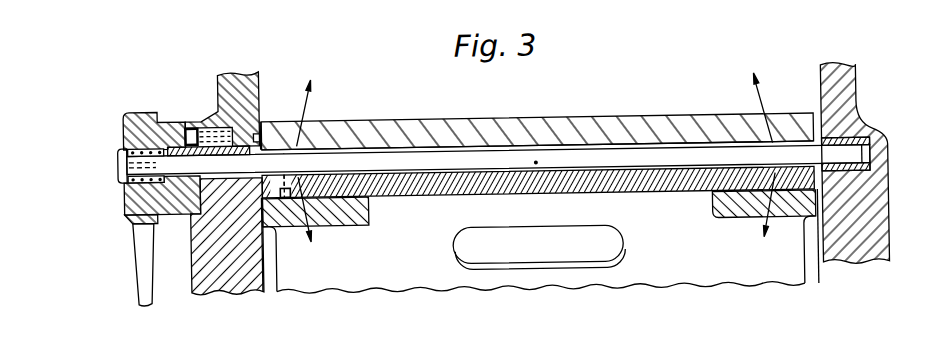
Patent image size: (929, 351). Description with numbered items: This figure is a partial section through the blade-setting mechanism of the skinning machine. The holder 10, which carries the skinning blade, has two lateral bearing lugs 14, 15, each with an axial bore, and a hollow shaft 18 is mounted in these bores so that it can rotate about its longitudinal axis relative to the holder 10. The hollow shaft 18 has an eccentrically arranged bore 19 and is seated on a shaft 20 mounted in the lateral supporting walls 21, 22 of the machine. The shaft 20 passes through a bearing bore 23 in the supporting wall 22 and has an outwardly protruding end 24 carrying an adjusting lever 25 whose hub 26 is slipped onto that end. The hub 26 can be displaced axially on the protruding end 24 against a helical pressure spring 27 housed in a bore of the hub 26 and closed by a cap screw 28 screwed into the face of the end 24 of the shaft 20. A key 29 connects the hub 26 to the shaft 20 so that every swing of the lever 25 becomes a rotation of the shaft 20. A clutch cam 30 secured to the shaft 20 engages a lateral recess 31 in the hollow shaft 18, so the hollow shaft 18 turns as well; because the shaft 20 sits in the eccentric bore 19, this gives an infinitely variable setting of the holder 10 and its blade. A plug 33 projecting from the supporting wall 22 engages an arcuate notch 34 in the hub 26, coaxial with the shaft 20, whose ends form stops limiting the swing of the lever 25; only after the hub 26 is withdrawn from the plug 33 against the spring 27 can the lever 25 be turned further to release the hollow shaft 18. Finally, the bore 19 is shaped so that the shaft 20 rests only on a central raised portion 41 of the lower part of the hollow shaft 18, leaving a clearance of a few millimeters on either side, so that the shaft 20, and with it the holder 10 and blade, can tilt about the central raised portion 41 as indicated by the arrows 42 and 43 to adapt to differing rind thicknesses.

The holder 10 is at (378, 125).
The lateral bearing lug 14 is at (363, 225).
The lateral bearing lug 15 is at (733, 216).
The hollow shaft 18 is at (437, 194).
The eccentrically arranged bore 19 is at (430, 147).
The shaft 20 is at (670, 158).
The lateral supporting wall 21 is at (849, 104).
The lateral supporting wall 22 is at (248, 71).
The bearing bore 23 is at (199, 212).
The outwardly protruding end 24 is at (176, 163).
The adjusting lever 25 is at (140, 274).
The hub 26 is at (128, 206).
The helical pressure spring 27 is at (130, 178).
The cap screw 28 is at (121, 162).
The key 29 is at (260, 119).
The clutch cam 30 is at (281, 194).
The lateral recess 31 is at (285, 194).
The plug 33 is at (210, 124).
The arcuate notch 34 is at (192, 122).
The central raised portion 41 is at (536, 163).
The arrow 42 is at (308, 97).
The arrow 43 is at (759, 91).